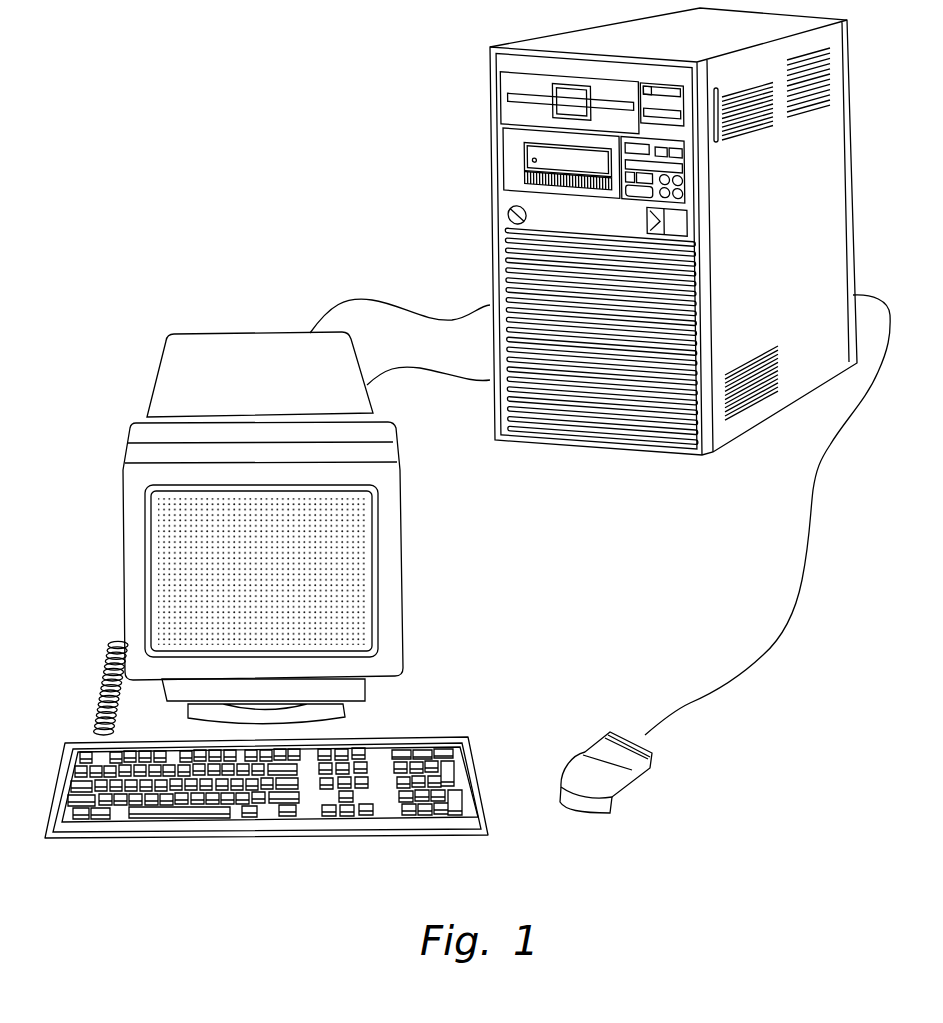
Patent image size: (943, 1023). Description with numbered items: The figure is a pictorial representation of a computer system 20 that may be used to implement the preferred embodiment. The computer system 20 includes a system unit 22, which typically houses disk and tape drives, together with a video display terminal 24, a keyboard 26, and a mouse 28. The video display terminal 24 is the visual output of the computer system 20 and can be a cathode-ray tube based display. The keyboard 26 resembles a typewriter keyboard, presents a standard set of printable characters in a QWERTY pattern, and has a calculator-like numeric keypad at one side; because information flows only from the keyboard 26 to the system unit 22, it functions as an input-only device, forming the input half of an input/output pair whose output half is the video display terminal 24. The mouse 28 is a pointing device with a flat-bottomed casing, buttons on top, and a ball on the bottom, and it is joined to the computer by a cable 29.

The computer system 20 is at (281, 206).
The system unit 22 is at (500, 198).
The video display terminal 24 is at (272, 357).
The keyboard 26 is at (297, 830).
The mouse 28 is at (614, 793).
The cable 29 is at (737, 673).